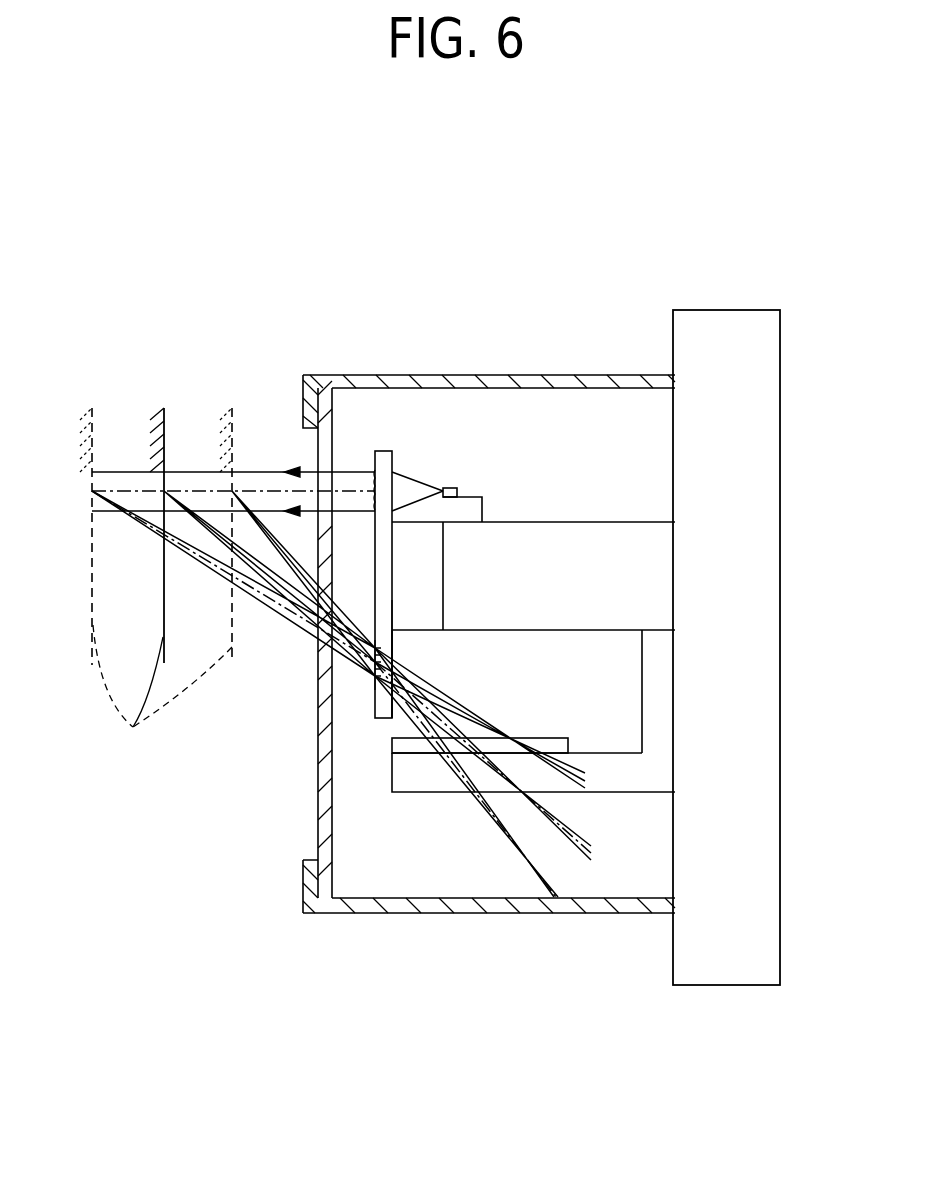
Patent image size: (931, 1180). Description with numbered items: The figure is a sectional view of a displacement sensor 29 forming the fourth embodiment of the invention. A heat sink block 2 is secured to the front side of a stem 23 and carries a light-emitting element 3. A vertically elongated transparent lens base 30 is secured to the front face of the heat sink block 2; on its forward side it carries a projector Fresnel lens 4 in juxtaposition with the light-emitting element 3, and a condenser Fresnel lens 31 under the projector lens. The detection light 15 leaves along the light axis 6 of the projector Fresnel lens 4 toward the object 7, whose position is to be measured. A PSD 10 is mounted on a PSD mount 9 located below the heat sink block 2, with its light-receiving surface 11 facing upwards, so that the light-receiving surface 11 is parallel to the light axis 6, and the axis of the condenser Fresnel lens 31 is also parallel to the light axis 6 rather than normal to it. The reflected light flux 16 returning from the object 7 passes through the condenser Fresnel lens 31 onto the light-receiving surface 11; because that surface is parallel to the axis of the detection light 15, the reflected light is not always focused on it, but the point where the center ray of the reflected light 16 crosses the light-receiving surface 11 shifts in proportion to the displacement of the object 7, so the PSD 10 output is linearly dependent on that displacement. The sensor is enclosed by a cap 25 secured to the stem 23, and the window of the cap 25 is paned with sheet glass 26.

The heat sink block 2 is at (530, 530).
The light-emitting element 3 is at (447, 490).
The projector Fresnel lens 4 is at (373, 480).
The light axis of the projector Fresnel lens 6 is at (130, 488).
The object 7 is at (162, 691).
The PSD mount 9 is at (408, 777).
The PSD 10 is at (562, 745).
The light-receiving surface 11 is at (541, 738).
The detection light 15 is at (257, 470).
The reflected light flux 16 is at (283, 585).
The stem 23 is at (757, 662).
The cap 25 is at (372, 375).
The sheet glass 26 is at (320, 817).
The displacement sensor 29 is at (456, 592).
The lens base 30 is at (387, 618).
The condenser Fresnel lens 31 is at (367, 680).